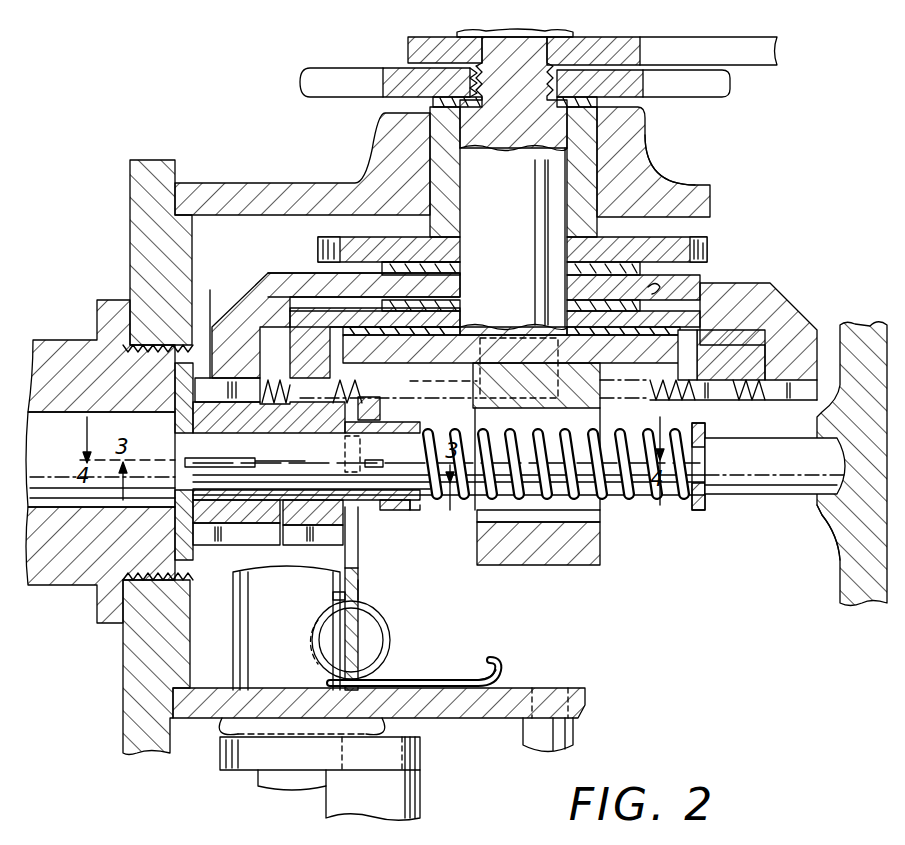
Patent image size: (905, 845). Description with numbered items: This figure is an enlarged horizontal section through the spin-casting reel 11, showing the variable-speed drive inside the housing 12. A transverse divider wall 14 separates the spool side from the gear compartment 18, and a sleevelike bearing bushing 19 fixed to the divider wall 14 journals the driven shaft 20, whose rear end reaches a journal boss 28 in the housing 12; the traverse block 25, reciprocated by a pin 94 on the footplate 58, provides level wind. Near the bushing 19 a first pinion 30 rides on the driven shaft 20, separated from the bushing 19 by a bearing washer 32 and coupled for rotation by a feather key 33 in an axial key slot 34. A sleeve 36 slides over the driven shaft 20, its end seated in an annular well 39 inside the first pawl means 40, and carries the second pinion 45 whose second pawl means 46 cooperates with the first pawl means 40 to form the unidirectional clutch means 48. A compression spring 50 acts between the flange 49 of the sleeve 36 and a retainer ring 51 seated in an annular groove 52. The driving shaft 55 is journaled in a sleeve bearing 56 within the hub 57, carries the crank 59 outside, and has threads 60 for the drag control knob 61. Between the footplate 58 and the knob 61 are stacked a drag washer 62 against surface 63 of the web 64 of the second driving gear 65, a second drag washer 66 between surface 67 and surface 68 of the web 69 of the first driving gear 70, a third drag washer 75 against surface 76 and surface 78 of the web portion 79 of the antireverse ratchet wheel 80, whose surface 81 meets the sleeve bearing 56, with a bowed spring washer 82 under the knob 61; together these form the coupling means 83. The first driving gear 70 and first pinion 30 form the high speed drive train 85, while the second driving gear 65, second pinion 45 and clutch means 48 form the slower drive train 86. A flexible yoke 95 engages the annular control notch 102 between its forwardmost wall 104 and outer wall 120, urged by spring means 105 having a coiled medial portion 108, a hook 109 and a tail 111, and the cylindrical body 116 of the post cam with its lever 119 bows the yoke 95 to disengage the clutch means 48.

The spin-casting reel 11 is at (203, 128).
The housing 12 is at (272, 183).
The divider wall 14 is at (140, 234).
The gear compartment 18 is at (713, 628).
The bearing bushing 19 is at (78, 340).
The driven shaft 20 is at (43, 441).
The traverse block 25 is at (553, 566).
The journal boss 28 is at (827, 505).
The first pinion 30 is at (216, 556).
The bearing washer 32 is at (172, 537).
The feather key 33 is at (233, 461).
The axial key slot 34 is at (378, 462).
The sleeve 36 is at (366, 532).
The annular well 39 is at (236, 510).
The first pawl means 40 is at (266, 531).
The second pinion 45 is at (310, 554).
The second pawl means 46 is at (276, 385).
The unidirectional clutch means 48 is at (268, 556).
The flange 49 is at (413, 510).
The compression spring 50 is at (653, 500).
The retainer ring 51 is at (698, 512).
The annular groove 52 is at (702, 464).
The driving shaft 55 is at (503, 191).
The sleeve bearing 56 is at (600, 165).
The hub 57 is at (636, 135).
The footplate 58 is at (558, 384).
The crank 59 is at (775, 53).
The threads 60 is at (470, 92).
The drag control knob 61 is at (300, 80).
The drag washer 62 is at (432, 298).
The surface 63 is at (490, 362).
The web 64 is at (463, 318).
The second driving gear 65 is at (715, 278).
The second drag washer 66 is at (465, 300).
The surface 67 is at (653, 308).
The surface 68 is at (347, 288).
The web 69 is at (463, 283).
The first driving gear 70 is at (794, 293).
The third drag washer 75 is at (465, 262).
The surface 76 is at (660, 287).
The surface 78 is at (382, 269).
The web portion 79 is at (460, 247).
The antireverse ratchet wheel 80 is at (700, 230).
The surface 81 is at (455, 221).
The bowed spring washer 82 is at (432, 101).
The coupling means 83 is at (555, 325).
The drive train 85 is at (205, 310).
The drive train 86 is at (267, 296).
The pin 94 is at (562, 420).
The flexible yoke 95 is at (373, 591).
The annular control notch 102 is at (367, 553).
The forwardmost wall 104 is at (338, 380).
The spring means 105 is at (402, 660).
The helically coiled medial portion 108 is at (393, 641).
The hook 109 is at (365, 611).
The tail 111 is at (478, 676).
The cylindrical body 116 is at (253, 670).
The lever 119 is at (237, 757).
The outer wall 120 is at (352, 423).